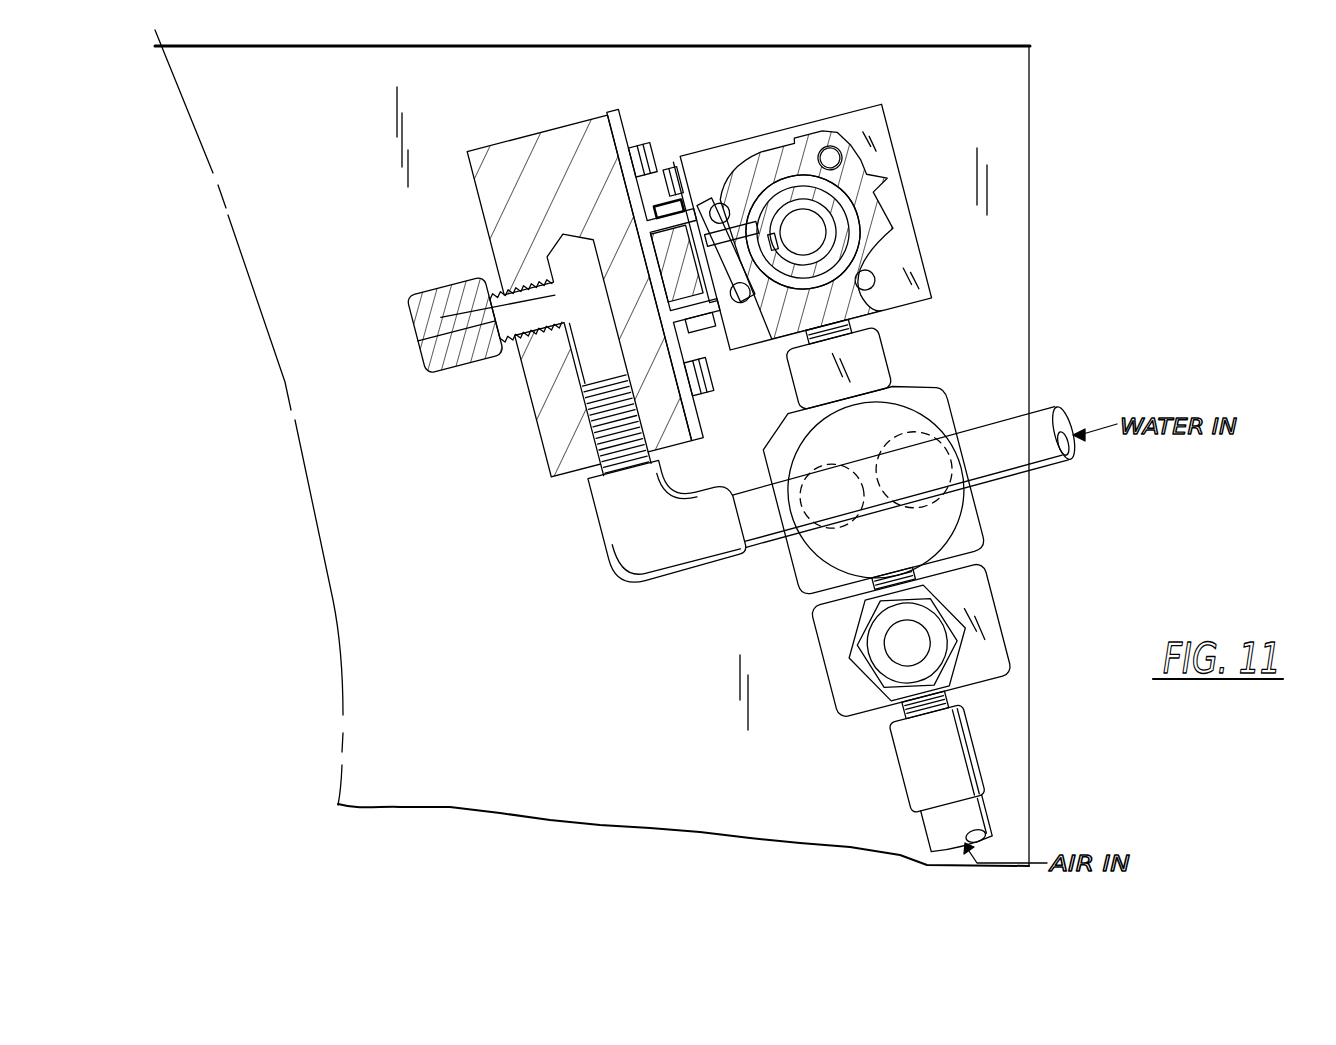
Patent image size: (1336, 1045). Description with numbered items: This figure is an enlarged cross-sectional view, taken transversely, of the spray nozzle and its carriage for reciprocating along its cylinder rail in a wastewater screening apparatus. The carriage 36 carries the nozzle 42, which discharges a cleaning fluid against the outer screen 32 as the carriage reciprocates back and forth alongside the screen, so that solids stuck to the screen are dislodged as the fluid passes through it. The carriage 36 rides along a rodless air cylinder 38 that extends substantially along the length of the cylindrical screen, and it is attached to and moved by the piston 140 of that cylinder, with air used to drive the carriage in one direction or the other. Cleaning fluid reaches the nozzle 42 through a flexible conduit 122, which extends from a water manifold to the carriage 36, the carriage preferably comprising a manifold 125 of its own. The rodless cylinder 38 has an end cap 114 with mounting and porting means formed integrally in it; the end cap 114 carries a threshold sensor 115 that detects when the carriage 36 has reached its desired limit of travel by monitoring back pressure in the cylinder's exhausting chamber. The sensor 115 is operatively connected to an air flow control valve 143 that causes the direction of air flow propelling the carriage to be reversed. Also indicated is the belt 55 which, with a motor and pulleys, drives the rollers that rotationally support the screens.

The outer screen 32 is at (195, 123).
The carriage 36 is at (623, 135).
The rodless air cylinder 38 is at (826, 126).
The nozzle 42 is at (437, 300).
The belt 55 is at (1003, 213).
The end cap 114 is at (878, 110).
The threshold sensor 115 is at (930, 433).
The flexible conduit 122 is at (1043, 467).
The manifold 125 is at (565, 80).
The piston 140 is at (850, 242).
The air flow control valve 143 is at (1010, 637).